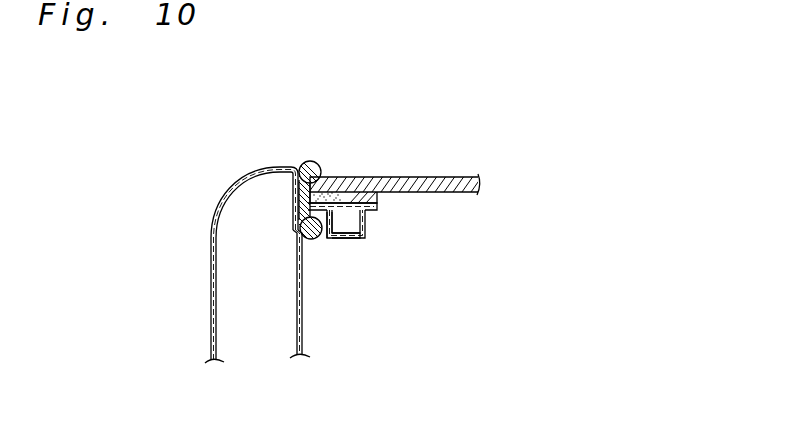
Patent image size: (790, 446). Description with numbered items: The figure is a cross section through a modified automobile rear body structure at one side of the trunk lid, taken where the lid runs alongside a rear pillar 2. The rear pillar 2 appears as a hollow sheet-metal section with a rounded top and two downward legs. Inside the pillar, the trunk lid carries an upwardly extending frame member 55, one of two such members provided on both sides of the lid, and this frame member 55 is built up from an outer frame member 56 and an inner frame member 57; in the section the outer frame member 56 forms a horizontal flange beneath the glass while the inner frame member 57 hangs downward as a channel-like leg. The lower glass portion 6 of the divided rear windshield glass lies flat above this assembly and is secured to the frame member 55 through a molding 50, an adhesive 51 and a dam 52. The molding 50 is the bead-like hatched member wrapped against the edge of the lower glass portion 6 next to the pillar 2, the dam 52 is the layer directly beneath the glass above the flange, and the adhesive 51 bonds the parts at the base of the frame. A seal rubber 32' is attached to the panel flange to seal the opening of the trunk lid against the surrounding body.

The rear pillar 2 is at (211, 253).
The lower glass portion 6 is at (445, 176).
The seal rubber 32' is at (334, 311).
The molding 50 is at (319, 163).
The adhesive 51 is at (348, 238).
The dam 52 is at (353, 176).
The frame member 55 is at (378, 232).
The outer frame member 56 is at (376, 199).
The inner frame member 57 is at (336, 238).